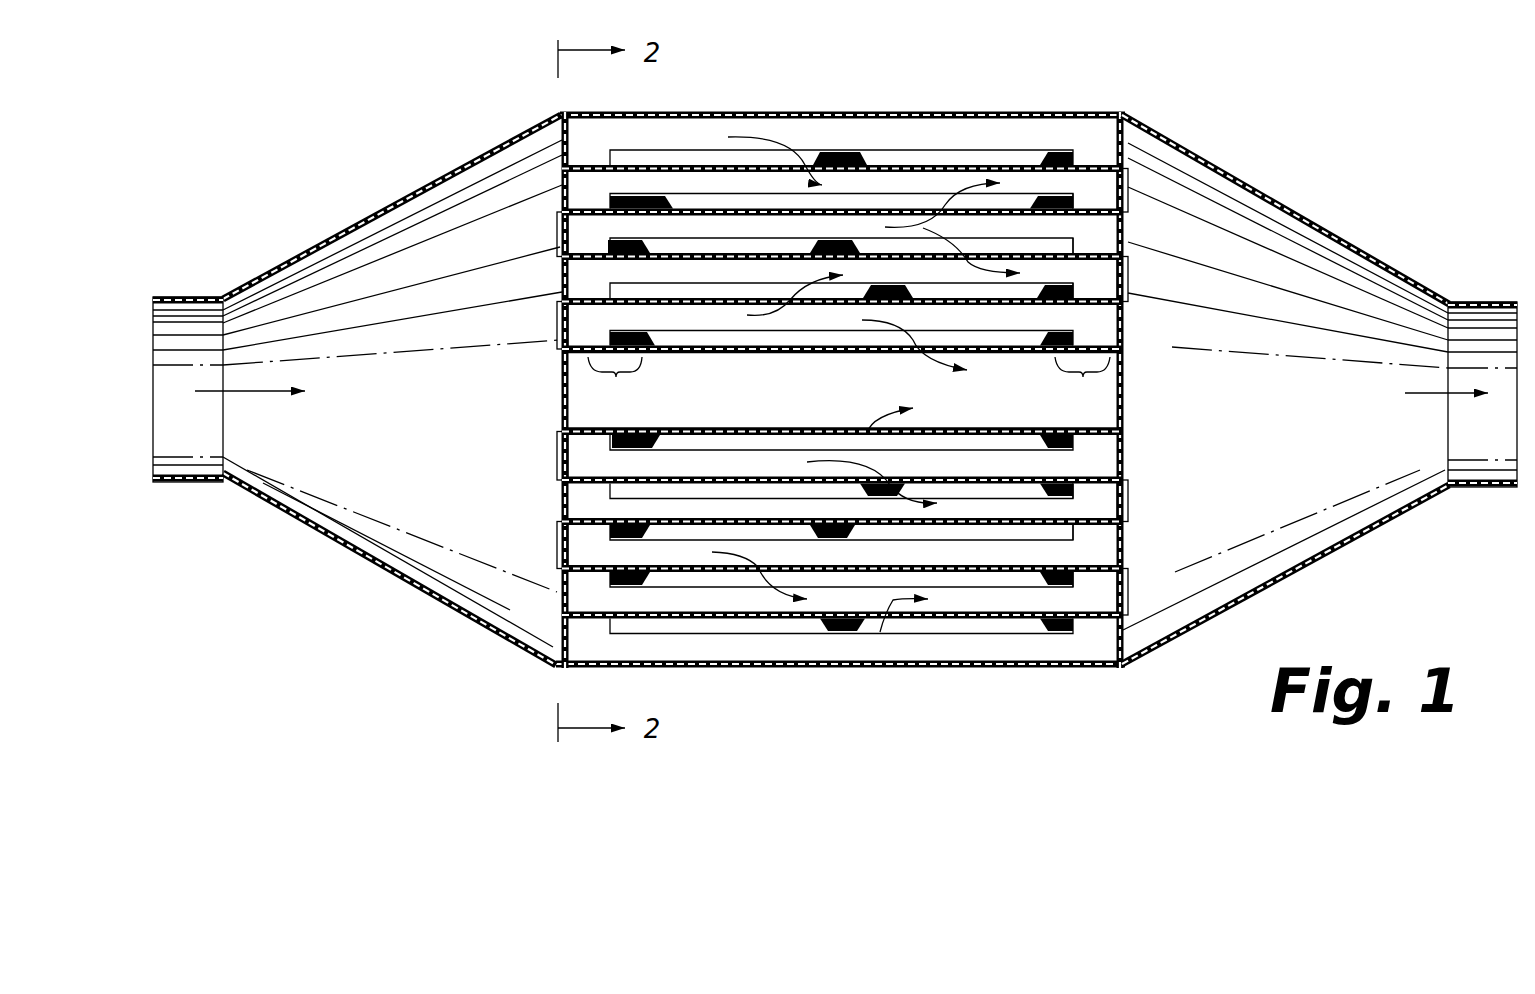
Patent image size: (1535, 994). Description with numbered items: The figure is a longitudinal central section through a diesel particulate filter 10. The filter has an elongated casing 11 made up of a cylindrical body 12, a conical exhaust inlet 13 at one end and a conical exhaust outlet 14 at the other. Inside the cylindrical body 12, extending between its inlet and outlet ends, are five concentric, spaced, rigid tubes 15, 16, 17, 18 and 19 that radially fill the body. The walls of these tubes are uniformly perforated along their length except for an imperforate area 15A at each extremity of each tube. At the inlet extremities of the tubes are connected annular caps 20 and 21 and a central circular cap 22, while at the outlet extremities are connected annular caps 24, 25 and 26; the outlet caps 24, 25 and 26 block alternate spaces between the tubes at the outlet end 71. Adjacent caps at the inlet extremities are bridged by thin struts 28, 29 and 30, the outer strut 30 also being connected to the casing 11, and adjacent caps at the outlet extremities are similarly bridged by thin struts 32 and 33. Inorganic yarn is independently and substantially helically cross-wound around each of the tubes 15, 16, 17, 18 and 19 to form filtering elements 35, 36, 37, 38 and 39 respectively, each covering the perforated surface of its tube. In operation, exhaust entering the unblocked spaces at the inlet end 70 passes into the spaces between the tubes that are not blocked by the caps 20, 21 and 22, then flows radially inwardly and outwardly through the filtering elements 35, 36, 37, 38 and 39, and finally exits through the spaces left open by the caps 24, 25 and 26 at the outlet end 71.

The diesel particulate filter 10 is at (1322, 94).
The casing 11 is at (433, 600).
The cylindrical body 12 is at (1027, 113).
The conical exhaust inlet 13 is at (332, 238).
The conical exhaust outlet 14 is at (1376, 258).
The tube 15 is at (958, 430).
The imperforate area 15A is at (846, 381).
The tube 16 is at (1086, 296).
The tube 17 is at (1086, 252).
The tube 18 is at (1086, 208).
The tube 19 is at (957, 165).
The annular cap 20 is at (560, 281).
The annular cap 21 is at (560, 577).
The central circular cap 22 is at (560, 384).
The annular cap 24 is at (1127, 331).
The annular cap 25 is at (1125, 233).
The annular cap 26 is at (1146, 127).
The thin strut 28 is at (560, 323).
The thin strut 29 is at (557, 223).
The thin strut 30 is at (512, 143).
The thin strut 32 is at (1130, 273).
The thin strut 33 is at (1130, 180).
The filtering element 35 is at (779, 335).
The filtering element 36 is at (725, 288).
The filtering element 37 is at (867, 240).
The filtering element 38 is at (758, 195).
The filtering element 39 is at (712, 150).
The inlet end 70 is at (188, 484).
The outlet end 71 is at (1477, 489).